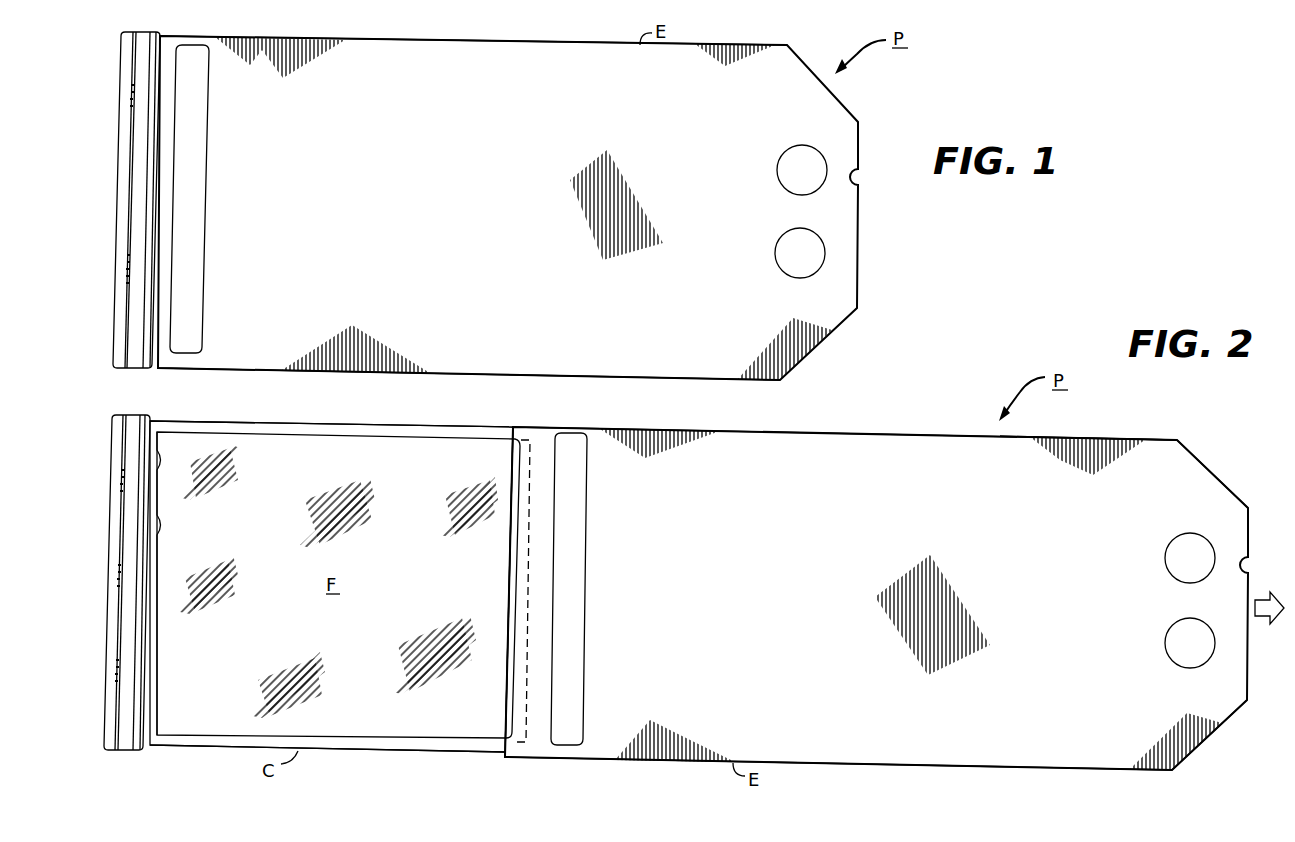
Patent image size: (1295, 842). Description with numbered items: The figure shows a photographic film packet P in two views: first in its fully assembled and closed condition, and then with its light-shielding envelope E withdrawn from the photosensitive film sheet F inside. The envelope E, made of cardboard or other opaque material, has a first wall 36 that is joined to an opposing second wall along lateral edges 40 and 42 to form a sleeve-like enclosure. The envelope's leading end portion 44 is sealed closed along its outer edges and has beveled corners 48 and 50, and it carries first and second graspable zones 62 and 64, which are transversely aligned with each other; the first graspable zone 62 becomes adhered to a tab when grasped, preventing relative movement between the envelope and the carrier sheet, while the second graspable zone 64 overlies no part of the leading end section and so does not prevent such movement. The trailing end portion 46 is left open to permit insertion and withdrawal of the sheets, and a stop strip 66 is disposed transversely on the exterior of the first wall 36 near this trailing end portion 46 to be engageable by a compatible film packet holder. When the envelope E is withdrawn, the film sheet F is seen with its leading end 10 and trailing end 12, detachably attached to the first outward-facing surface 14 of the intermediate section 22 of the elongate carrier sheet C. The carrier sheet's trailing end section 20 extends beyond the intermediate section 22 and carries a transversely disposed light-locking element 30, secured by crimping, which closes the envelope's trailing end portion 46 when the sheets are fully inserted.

In FIG. 2, the leading end 10 is at (524, 672).
In FIG. 2, the trailing end 12 is at (152, 676).
In FIG. 2, the first outward-facing surface 14 is at (413, 747).
In FIG. 2, the trailing end section 20 is at (152, 420).
In FIG. 2, the intermediate section 22 is at (344, 423).
In FIG. 1, the light-locking element 30 is at (117, 178).
In FIG. 2, the light-locking element 30 is at (108, 553).
In FIG. 1, the first wall 36 is at (392, 214).
In FIG. 2, the first wall 36 is at (792, 609).
In FIG. 1, the lateral edge 40 is at (490, 377).
In FIG. 2, the lateral edge 40 is at (1000, 766).
In FIG. 1, the lateral edge 42 is at (490, 38).
In FIG. 2, the lateral edge 42 is at (825, 433).
In FIG. 2, the leading end portion 44 is at (1150, 414).
In FIG. 2, the trailing end portion 46 is at (545, 427).
In FIG. 2, the beveled corner 48 is at (1222, 727).
In FIG. 2, the beveled corner 50 is at (1216, 478).
In FIG. 1, the first graspable zone 62 is at (775, 253).
In FIG. 2, the first graspable zone 62 is at (1165, 643).
In FIG. 1, the second graspable zone 64 is at (777, 170).
In FIG. 2, the second graspable zone 64 is at (1165, 558).
In FIG. 1, the stop strip 66 is at (203, 212).
In FIG. 2, the stop strip 66 is at (581, 602).